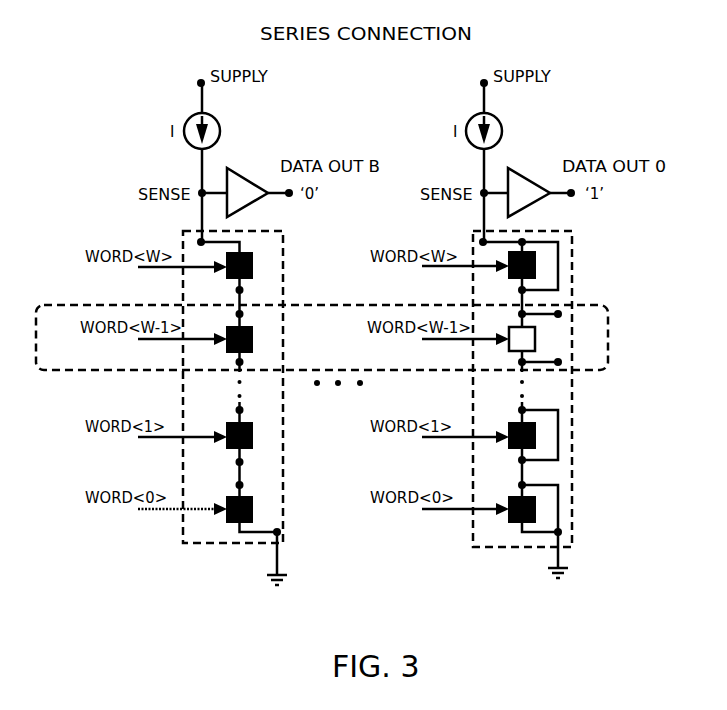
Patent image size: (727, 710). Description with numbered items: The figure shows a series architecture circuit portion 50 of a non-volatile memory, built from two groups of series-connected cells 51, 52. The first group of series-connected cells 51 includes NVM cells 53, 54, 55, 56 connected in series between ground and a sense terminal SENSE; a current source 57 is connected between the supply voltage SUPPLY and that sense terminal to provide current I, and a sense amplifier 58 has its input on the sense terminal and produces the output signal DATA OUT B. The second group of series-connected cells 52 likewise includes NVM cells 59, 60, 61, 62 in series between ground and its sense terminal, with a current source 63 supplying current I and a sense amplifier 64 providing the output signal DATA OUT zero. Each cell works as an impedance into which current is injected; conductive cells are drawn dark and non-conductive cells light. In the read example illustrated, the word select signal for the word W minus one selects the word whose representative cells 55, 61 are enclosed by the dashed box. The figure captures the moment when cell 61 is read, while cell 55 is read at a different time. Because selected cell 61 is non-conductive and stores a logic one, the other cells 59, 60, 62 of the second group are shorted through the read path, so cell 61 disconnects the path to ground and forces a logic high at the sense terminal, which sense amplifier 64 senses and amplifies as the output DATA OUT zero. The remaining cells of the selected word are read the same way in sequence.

The series architecture circuit portion 50 is at (190, 625).
The series-connected cells 51 is at (223, 550).
The series-connected cells 52 is at (511, 552).
The NVM cell 53 is at (253, 518).
The NVM cell 54 is at (253, 443).
The NVM cell 55 is at (253, 348).
The NVM cell 56 is at (253, 273).
The current source 57 is at (221, 131).
The sense amplifier 58 is at (231, 170).
The NVM cell 59 is at (514, 496).
The NVM cell 60 is at (512, 421).
The NVM cell 61 is at (514, 326).
The NVM cell 62 is at (511, 279).
The current source 63 is at (503, 131).
The sense amplifier 64 is at (513, 170).